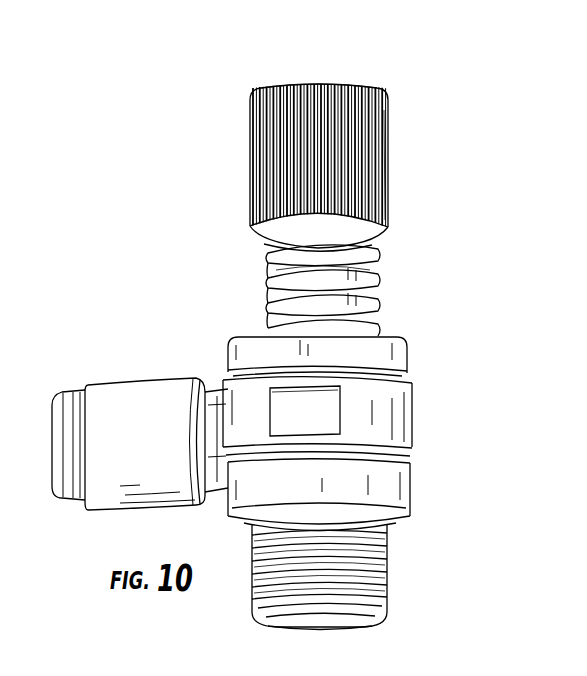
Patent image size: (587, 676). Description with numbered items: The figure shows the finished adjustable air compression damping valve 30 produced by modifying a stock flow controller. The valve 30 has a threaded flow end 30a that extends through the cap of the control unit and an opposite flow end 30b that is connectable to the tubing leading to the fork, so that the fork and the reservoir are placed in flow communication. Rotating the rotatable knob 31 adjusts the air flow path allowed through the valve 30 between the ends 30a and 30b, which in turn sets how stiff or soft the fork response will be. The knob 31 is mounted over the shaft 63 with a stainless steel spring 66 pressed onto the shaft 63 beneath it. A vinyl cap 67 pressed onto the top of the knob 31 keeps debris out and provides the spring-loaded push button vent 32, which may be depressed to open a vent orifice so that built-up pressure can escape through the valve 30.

The adjustable air compression damping valve 30 is at (187, 250).
The flow end 30a is at (372, 557).
The opposite flow end 30b is at (172, 380).
The rotatable knob 31 is at (391, 169).
The spring-loaded push button vent 32 is at (358, 79).
The shaft 63 is at (343, 305).
The stainless steel spring 66 is at (368, 277).
The vinyl cap 67 is at (325, 81).